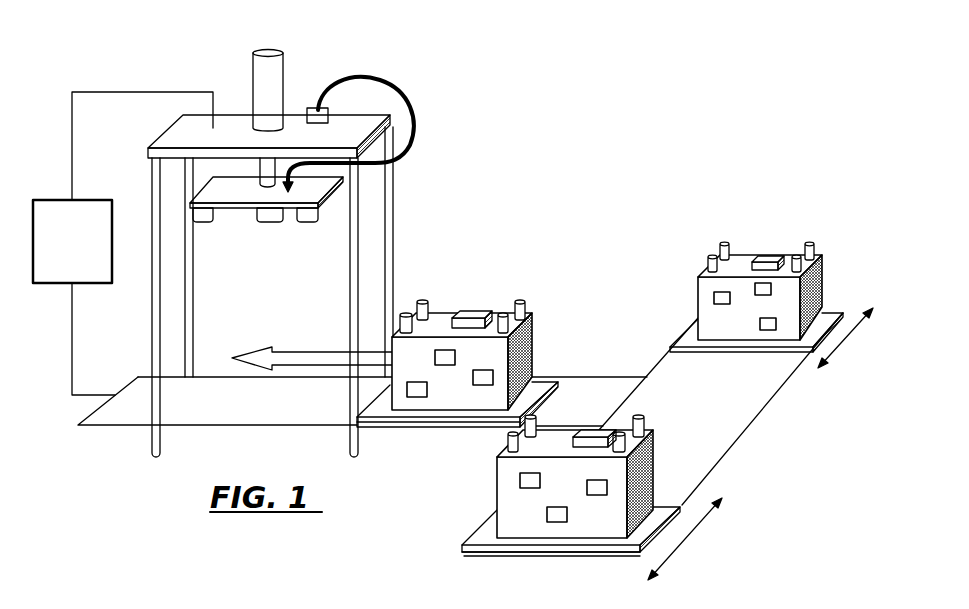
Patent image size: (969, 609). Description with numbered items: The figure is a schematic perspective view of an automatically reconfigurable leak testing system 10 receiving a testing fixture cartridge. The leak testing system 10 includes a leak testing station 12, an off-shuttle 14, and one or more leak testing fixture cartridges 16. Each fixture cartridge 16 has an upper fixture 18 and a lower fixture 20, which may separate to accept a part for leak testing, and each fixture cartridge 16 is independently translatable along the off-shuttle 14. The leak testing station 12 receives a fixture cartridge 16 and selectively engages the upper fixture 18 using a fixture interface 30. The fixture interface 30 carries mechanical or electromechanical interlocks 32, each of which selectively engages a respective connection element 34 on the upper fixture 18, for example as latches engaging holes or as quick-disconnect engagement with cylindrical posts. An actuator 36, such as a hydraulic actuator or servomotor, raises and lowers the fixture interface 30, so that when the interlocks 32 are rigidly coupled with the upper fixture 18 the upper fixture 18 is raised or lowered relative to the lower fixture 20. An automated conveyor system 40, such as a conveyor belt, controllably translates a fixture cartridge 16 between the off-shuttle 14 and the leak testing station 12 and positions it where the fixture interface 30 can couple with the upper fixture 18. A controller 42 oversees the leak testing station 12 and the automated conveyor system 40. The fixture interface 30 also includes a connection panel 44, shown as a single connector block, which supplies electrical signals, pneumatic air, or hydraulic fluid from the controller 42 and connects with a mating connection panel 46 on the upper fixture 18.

The leak testing system 10 is at (750, 83).
The leak testing station 12 is at (425, 100).
The off-shuttle 14 is at (745, 432).
The fixture cartridge 16 is at (558, 319).
The upper fixture 18 is at (537, 358).
The lower fixture 20 is at (397, 424).
The fixture interface 30 is at (197, 192).
The interlocks 32 is at (203, 224).
The connection elements 34 is at (404, 313).
The actuator 36 is at (285, 70).
The automated conveyor system 40 is at (118, 428).
The controller 42 is at (82, 253).
The connection panel 44 is at (269, 224).
The mating connection panel 46 is at (477, 313).